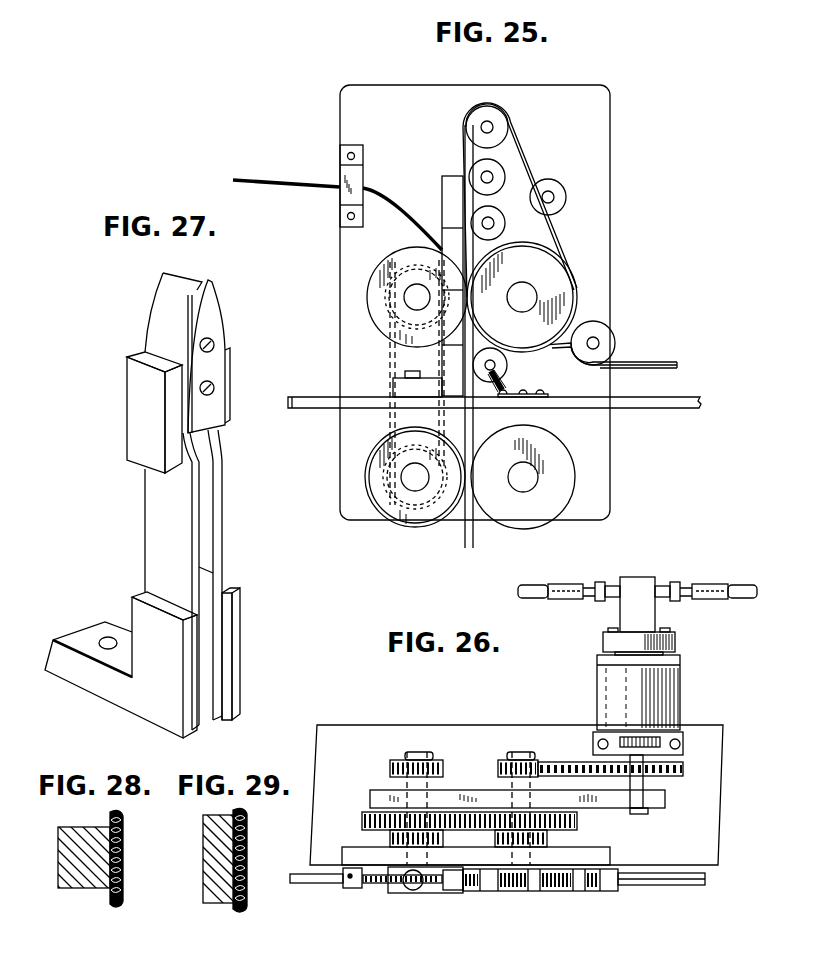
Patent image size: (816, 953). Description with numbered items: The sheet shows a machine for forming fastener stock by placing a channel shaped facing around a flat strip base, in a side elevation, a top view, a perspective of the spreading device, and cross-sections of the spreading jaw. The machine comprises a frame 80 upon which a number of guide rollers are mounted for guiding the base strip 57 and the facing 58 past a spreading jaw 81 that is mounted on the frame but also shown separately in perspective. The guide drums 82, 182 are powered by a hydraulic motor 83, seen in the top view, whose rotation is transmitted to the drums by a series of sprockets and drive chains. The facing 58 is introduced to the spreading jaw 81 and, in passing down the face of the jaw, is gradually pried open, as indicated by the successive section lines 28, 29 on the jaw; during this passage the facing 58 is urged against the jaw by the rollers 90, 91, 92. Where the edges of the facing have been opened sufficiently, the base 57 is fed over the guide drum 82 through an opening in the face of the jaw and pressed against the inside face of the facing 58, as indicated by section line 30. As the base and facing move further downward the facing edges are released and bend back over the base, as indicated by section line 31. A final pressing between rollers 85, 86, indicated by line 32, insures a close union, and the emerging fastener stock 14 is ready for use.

In FIG. 25, the fastener stock 14 is at (465, 545).
In FIG. 27, the section line 28 is at (105, 312).
In FIG. 27, the section line 29 is at (105, 410).
In FIG. 27, the section line 30 is at (105, 458).
In FIG. 27, the section line 31 is at (97, 612).
In FIG. 25, the section line 32 is at (458, 474).
In FIG. 25, the base strip 57 is at (290, 183).
In FIG. 26, the base strip 57 is at (330, 882).
In FIG. 25, the facing 58 is at (666, 364).
In FIG. 26, the facing 58 is at (635, 888).
In FIG. 28, the facing 58 is at (123, 824).
In FIG. 29, the facing 58 is at (247, 824).
In FIG. 25, the frame 80 is at (370, 95).
In FIG. 27, the frame 80 is at (218, 434).
In FIG. 25, the spreading jaw 81 is at (448, 177).
In FIG. 27, the spreading jaw 81 is at (182, 283).
In FIG. 28, the spreading jaw 81 is at (85, 878).
In FIG. 29, the spreading jaw 81 is at (212, 897).
In FIG. 25, the guide drum 82 is at (388, 259).
In FIG. 26, the hydraulic motor 83 is at (683, 692).
In FIG. 25, the roller 85 is at (406, 516).
In FIG. 25, the roller 86 is at (570, 494).
In FIG. 25, the roller 90 is at (497, 168).
In FIG. 25, the roller 91 is at (497, 215).
In FIG. 25, the roller 92 is at (507, 366).
In FIG. 25, the guide drum 182 is at (545, 265).